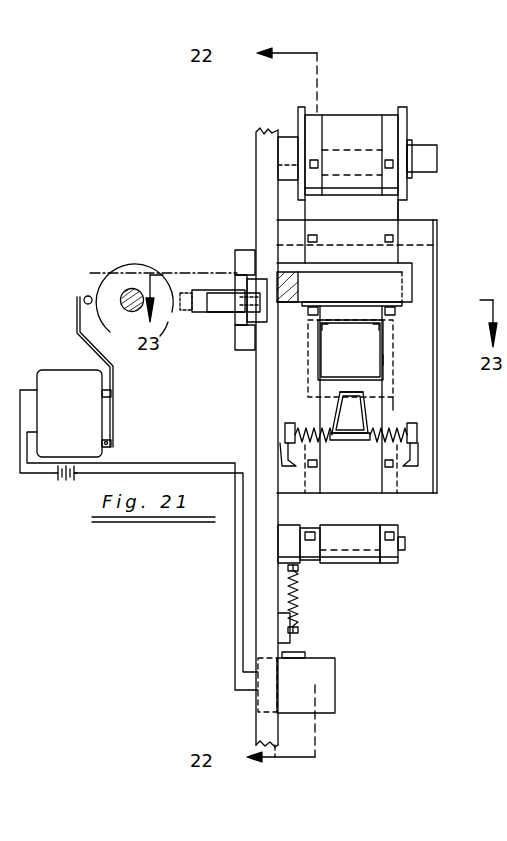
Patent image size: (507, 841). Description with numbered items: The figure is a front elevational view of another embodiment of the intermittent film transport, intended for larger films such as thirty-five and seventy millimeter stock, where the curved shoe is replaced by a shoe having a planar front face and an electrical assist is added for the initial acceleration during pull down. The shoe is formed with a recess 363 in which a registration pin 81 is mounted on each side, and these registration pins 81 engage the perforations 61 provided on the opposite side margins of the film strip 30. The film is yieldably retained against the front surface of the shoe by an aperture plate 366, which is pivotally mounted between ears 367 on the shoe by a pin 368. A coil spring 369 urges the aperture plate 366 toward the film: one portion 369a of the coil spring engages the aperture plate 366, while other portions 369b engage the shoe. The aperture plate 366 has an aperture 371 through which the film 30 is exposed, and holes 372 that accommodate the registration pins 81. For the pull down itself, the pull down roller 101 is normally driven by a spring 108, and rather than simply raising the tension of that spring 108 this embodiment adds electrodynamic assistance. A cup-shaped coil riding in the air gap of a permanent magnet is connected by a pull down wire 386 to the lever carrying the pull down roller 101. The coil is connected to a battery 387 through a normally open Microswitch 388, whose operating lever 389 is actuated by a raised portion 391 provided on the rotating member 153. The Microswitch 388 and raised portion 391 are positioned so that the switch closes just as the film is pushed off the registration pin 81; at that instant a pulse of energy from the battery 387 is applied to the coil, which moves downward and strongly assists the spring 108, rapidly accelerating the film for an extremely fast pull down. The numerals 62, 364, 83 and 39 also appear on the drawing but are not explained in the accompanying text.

The spool 62 is at (368, 130).
The film strip 30 is at (400, 210).
The perforations 61 is at (308, 238).
The registration pin 81 is at (392, 306).
The holes 372 is at (397, 310).
The recess 363 is at (392, 382).
The block 364 is at (350, 350).
The contact 83 is at (376, 328).
The aperture 371 is at (382, 360).
The aperture plate 366 is at (393, 404).
The portion of coil spring 369a is at (377, 405).
The pin 368 is at (353, 447).
The coil spring 369 is at (330, 413).
The ears 367 is at (287, 426).
The portions of coil spring 369b is at (282, 460).
The pull down roller 101 is at (357, 545).
The spring 108 is at (300, 600).
The pull down wire 386 is at (298, 652).
The battery 387 is at (65, 482).
The Microswitch 388 is at (70, 380).
The operating lever 389 is at (88, 296).
The rotating member 153 is at (137, 262).
The shaft 39 is at (125, 310).
The raised portion 391 is at (172, 280).